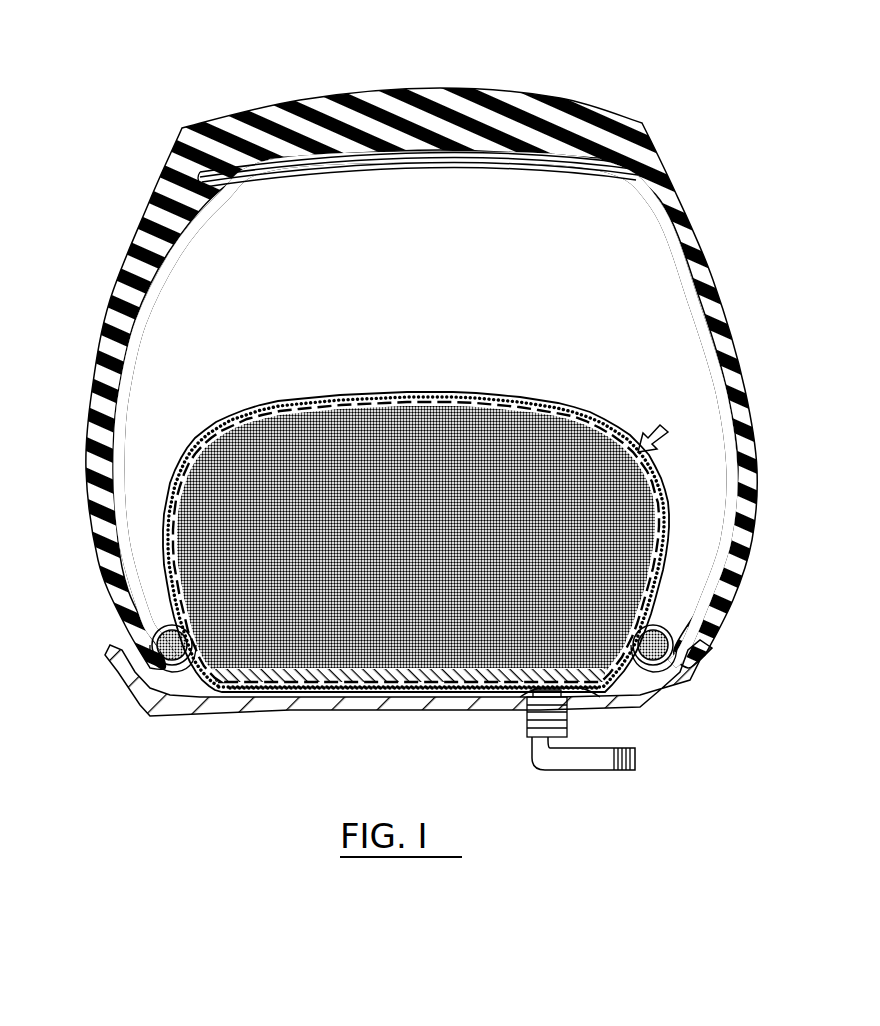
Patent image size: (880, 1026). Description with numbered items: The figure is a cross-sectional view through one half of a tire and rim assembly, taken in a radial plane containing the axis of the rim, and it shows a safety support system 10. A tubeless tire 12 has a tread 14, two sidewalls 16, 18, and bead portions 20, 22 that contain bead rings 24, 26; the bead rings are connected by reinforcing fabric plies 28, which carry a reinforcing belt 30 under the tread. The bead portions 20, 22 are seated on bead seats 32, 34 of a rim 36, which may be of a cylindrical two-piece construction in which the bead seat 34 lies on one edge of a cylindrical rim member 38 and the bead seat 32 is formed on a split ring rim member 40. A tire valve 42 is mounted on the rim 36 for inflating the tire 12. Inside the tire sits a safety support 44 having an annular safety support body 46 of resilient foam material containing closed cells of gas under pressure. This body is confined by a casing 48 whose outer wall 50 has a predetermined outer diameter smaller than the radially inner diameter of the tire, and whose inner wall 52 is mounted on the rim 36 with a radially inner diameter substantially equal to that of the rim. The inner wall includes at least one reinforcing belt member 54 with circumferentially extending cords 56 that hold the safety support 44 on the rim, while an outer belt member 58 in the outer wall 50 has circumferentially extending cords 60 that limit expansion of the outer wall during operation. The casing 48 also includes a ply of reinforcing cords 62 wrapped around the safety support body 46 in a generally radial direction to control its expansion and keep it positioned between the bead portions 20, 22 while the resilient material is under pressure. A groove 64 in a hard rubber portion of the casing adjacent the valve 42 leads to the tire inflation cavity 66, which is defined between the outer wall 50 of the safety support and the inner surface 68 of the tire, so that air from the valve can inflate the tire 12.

The safety support system 10 is at (631, 70).
The tubeless tire 12 is at (442, 98).
The tread 14 is at (640, 130).
The sidewall 16 is at (122, 290).
The sidewall 18 is at (718, 310).
The bead portion 20 is at (130, 602).
The bead portion 22 is at (712, 578).
The bead ring 24 is at (160, 640).
The bead ring 26 is at (698, 648).
The reinforcing fabric plies 28 is at (712, 357).
The reinforcing belt 30 is at (660, 176).
The bead seat 32 is at (150, 678).
The bead seat 34 is at (668, 684).
The rim 36 is at (373, 704).
The cylindrical rim member 38 is at (664, 695).
The split ring rim member 40 is at (146, 704).
The tire valve 42 is at (596, 756).
The safety support 44 is at (433, 550).
The annular safety support body 46 is at (402, 444).
The casing 48 is at (325, 401).
The outer wall 50 is at (540, 420).
The inner wall 52 is at (340, 692).
The reinforcing belt member 54 is at (462, 695).
The circumferentially extending cords 56 is at (524, 704).
The outer belt member 58 is at (600, 414).
The circumferentially extending cords 60 is at (671, 434).
The ply of reinforcing cords 62 is at (432, 684).
The groove 64 is at (604, 696).
The tire inflation cavity 66 is at (534, 260).
The inner surface 68 is at (389, 178).